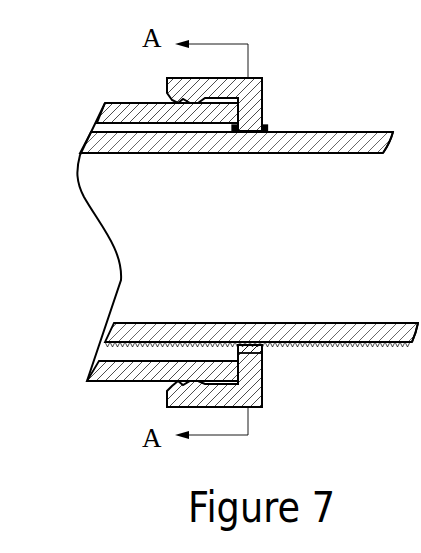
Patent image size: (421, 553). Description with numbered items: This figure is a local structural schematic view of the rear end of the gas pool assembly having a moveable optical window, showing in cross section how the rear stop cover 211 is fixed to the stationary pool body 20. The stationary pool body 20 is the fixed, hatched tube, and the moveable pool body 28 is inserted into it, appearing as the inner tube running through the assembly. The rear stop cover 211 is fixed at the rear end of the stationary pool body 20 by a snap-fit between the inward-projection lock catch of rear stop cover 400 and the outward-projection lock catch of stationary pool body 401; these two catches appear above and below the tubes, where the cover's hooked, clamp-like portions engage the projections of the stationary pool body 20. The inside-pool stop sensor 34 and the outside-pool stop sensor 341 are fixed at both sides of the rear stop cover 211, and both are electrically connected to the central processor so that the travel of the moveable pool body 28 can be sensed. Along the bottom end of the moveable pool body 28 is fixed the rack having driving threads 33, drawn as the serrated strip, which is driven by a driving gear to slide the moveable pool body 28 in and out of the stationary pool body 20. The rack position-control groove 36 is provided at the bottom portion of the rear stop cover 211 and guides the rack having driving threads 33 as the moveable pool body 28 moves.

The stationary pool body 20 is at (130, 102).
The moveable pool body 28 is at (332, 138).
The rack having driving threads 33 is at (338, 347).
The inside-pool stop sensor 34 is at (262, 108).
The outside-pool stop sensor 341 is at (267, 127).
The rack position-control groove 36 is at (263, 353).
The rear stop cover 211 is at (262, 78).
The inward-projection lock catch of rear stop cover 400 is at (167, 94).
The outward-projection lock catch of stationary pool body 401 is at (263, 400).